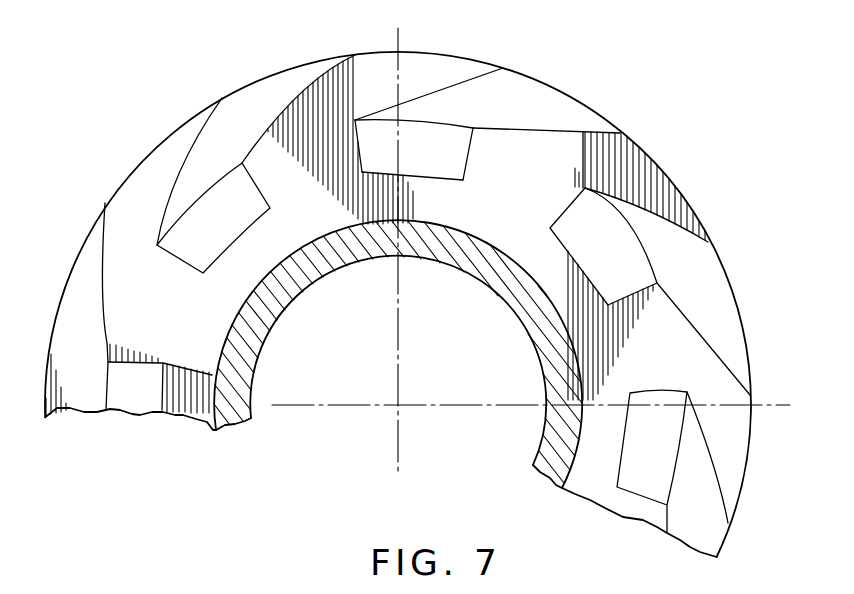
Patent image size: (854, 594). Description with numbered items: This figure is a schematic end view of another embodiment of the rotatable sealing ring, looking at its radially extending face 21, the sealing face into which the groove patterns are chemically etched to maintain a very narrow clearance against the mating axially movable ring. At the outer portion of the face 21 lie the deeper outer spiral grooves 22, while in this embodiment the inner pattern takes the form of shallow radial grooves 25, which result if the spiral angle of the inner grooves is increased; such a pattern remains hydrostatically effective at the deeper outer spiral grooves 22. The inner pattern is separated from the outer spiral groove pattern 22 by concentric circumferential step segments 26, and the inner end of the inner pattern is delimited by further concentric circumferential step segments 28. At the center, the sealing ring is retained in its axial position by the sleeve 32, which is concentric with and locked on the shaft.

The radially extending face 21 is at (314, 214).
The outer spiral groove pattern 22 is at (510, 116).
The shallow radial grooves 25 is at (462, 157).
The concentric circumferential step segments 26 is at (413, 118).
The concentric circumferential step segments 28 is at (430, 177).
The sleeve 32 is at (333, 265).